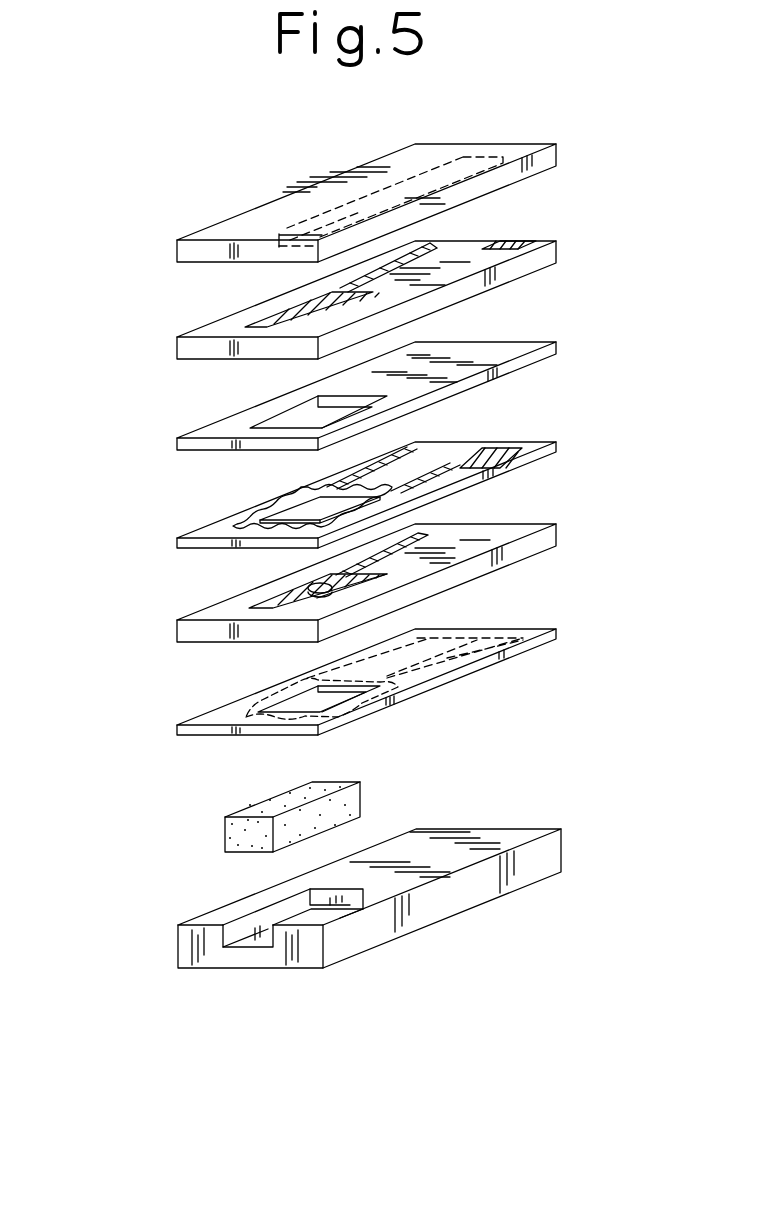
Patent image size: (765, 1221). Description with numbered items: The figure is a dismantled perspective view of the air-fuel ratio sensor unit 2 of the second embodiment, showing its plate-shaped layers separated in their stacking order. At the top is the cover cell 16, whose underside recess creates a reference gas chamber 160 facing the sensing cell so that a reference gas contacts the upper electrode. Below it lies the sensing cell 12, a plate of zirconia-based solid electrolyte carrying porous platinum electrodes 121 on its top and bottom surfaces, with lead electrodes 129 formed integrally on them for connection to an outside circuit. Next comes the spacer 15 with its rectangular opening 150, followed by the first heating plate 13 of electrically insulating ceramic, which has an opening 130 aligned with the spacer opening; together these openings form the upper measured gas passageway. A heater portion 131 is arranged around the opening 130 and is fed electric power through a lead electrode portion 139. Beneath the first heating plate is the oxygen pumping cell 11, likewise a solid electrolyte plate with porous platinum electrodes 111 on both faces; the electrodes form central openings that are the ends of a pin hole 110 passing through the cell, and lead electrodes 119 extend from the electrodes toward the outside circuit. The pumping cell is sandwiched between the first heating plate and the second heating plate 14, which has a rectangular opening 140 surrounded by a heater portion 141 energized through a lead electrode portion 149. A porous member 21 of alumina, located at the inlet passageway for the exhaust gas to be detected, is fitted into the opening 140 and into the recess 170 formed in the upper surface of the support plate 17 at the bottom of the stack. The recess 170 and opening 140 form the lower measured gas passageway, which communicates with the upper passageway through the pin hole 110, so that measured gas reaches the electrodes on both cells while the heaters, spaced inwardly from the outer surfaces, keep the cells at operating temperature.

The sensor assembly 2 is at (116, 537).
The cover cell 16 is at (398, 201).
The reference gas chamber 160 is at (296, 236).
The sensing cell 12 is at (366, 295).
The electrodes 121 is at (278, 322).
The lead electrodes 129 is at (437, 245).
The spacer 15 is at (368, 391).
The opening 150 is at (288, 420).
The first heating plate 13 is at (370, 484).
The opening 130 is at (310, 517).
The heater portion 131 is at (236, 529).
The lead electrode portion 139 is at (448, 468).
The oxygen pumping cell 11 is at (368, 600).
The electrodes 111 is at (300, 592).
The lead electrodes 119 is at (450, 545).
The pin hole 110 is at (318, 594).
The second heating plate 14 is at (366, 694).
The opening 140 is at (318, 705).
The heater portion 141 is at (245, 698).
The lead electrode portion 149 is at (462, 668).
The porous member 21 is at (228, 840).
The support plate 17 is at (395, 927).
The recess 170 is at (262, 947).